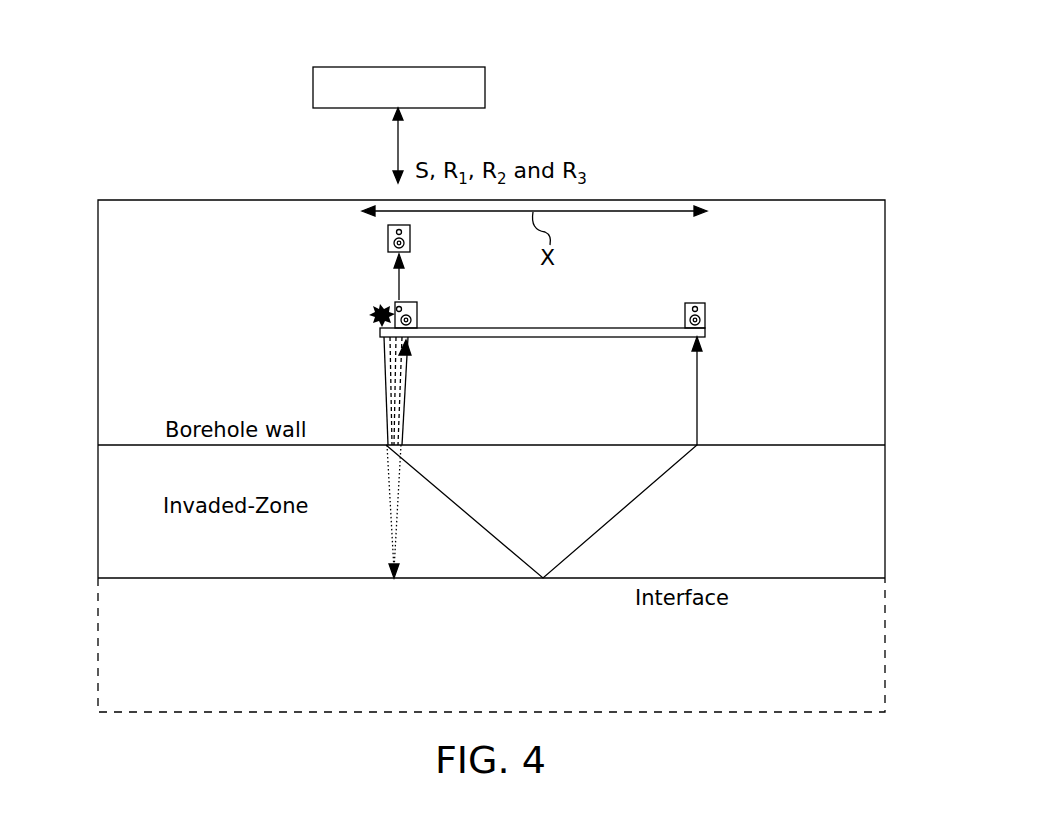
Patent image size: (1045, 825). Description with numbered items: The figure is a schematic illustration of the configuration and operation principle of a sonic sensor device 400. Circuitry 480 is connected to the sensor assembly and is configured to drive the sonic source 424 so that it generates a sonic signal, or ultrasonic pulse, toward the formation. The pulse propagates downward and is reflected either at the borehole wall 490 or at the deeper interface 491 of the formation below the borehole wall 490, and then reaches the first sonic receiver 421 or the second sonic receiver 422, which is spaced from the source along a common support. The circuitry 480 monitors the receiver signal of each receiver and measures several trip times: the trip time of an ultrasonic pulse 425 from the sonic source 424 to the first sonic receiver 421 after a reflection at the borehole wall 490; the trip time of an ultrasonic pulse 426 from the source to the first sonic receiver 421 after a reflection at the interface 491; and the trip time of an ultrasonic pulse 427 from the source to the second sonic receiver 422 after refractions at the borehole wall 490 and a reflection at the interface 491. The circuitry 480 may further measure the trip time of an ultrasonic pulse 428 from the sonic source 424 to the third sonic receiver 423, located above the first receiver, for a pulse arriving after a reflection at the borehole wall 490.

The sonic sensor device 400 is at (143, 60).
The circuitry 480 is at (486, 88).
The first sonic receiver R1 421 is at (394, 301).
The second sonic receiver R2 422 is at (706, 312).
The third sonic receiver R3 423 is at (387, 234).
The sonic source S 424 is at (378, 323).
The ultrasonic pulse 425 is at (406, 360).
The ultrasonic pulse 426 is at (404, 400).
The ultrasonic pulse 427 is at (697, 392).
The ultrasonic pulse 428 is at (398, 282).
The borehole wall 490 is at (117, 445).
The interface 491 is at (857, 578).